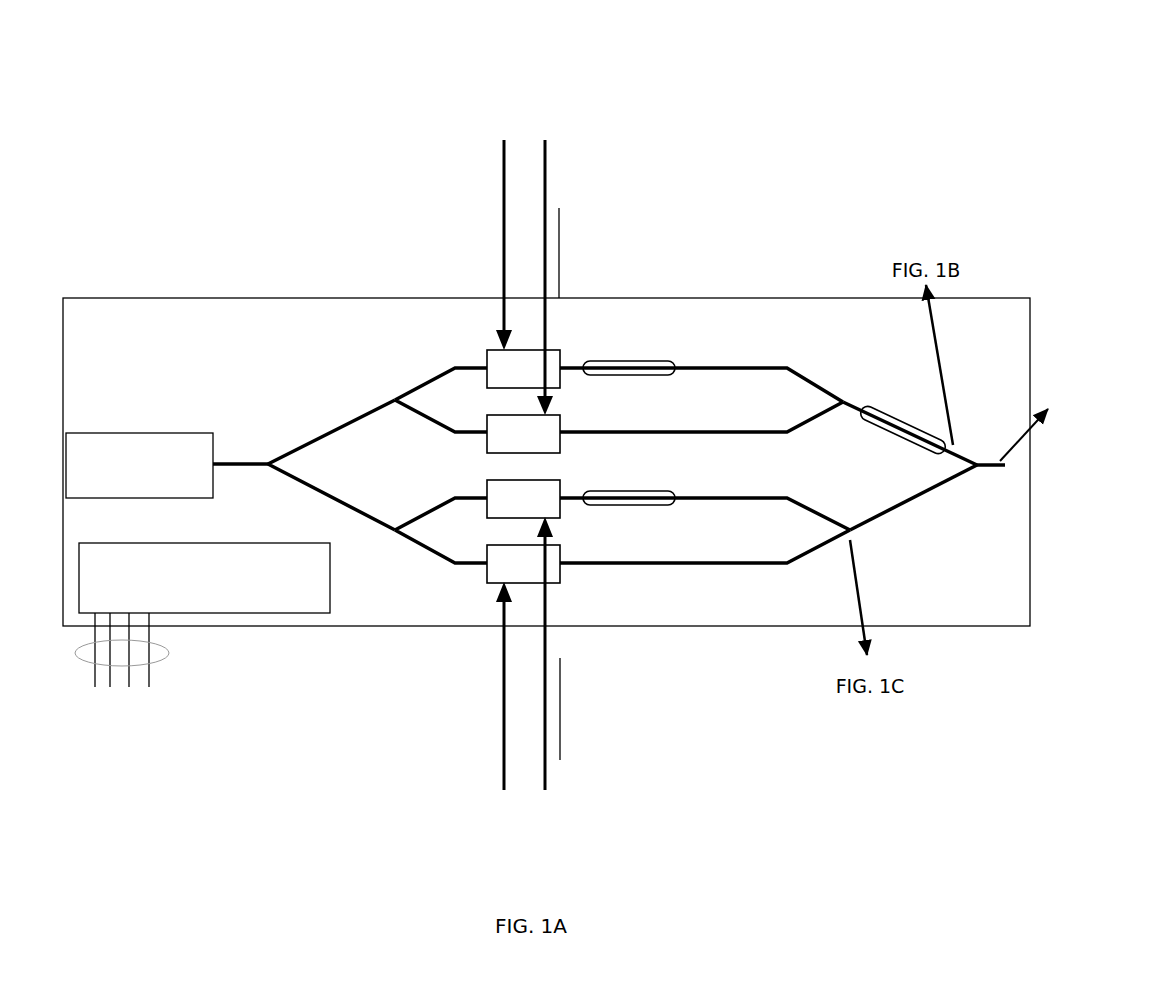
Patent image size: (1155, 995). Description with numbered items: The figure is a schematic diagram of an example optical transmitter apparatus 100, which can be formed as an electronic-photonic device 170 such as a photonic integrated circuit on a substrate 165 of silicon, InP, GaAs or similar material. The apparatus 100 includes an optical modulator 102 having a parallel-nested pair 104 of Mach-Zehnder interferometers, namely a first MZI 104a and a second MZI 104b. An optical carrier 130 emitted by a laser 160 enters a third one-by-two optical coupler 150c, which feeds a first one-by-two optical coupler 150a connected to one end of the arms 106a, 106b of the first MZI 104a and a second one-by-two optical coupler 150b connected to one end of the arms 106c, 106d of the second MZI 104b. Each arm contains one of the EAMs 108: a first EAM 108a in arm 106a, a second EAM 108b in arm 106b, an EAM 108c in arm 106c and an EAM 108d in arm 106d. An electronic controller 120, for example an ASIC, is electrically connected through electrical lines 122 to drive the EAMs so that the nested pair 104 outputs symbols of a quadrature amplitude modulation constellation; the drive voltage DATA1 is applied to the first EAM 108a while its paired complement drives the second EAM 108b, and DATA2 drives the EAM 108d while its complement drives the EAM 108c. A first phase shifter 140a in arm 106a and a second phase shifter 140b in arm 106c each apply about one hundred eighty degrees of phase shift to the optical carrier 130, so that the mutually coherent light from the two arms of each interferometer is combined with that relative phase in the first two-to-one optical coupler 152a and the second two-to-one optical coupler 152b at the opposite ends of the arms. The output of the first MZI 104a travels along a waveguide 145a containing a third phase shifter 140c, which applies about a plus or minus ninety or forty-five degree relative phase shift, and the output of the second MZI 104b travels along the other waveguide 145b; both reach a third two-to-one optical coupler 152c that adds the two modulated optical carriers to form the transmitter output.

The electronic-photonic device 170 is at (105, 145).
The apparatus 100 is at (283, 322).
The optical modulator 102 is at (400, 316).
The parallel-nested pair of MZIs 104 is at (704, 218).
The first MZI 104a is at (678, 320).
The second MZI 104b is at (655, 615).
The EAMs 108 is at (606, 276).
The first EAM 108a is at (553, 352).
The second EAM 108b is at (560, 420).
The first EAM of second MZI 108c is at (560, 485).
The second EAM of second MZI 108d is at (560, 550).
The electrical lines 122 is at (170, 657).
The substrate 165 is at (118, 338).
The laser 160 is at (122, 491).
The optical carrier 130 is at (240, 449).
The electronic controller 120 is at (188, 605).
The first 1:2 optical coupler 150a is at (395, 396).
The second 1:2 optical coupler 150b is at (395, 526).
The third 1:2 optical coupler 150c is at (268, 450).
The first arm of first MZI 106a is at (737, 364).
The second arm of first MZI 106b is at (737, 429).
The first arm of second MZI 106c is at (740, 495).
The second arm of second MZI 106d is at (727, 561).
The first phase shifter 140a is at (648, 377).
The second phase shifter 140b is at (648, 507).
The third phase shifter 140c is at (884, 427).
The first 2:1 optical coupler 152a is at (845, 386).
The second 2:1 optical coupler 152b is at (850, 521).
The third 2:1 optical coupler 152c is at (988, 454).
The waveguide 145a is at (965, 467).
The other waveguide 145b is at (928, 493).